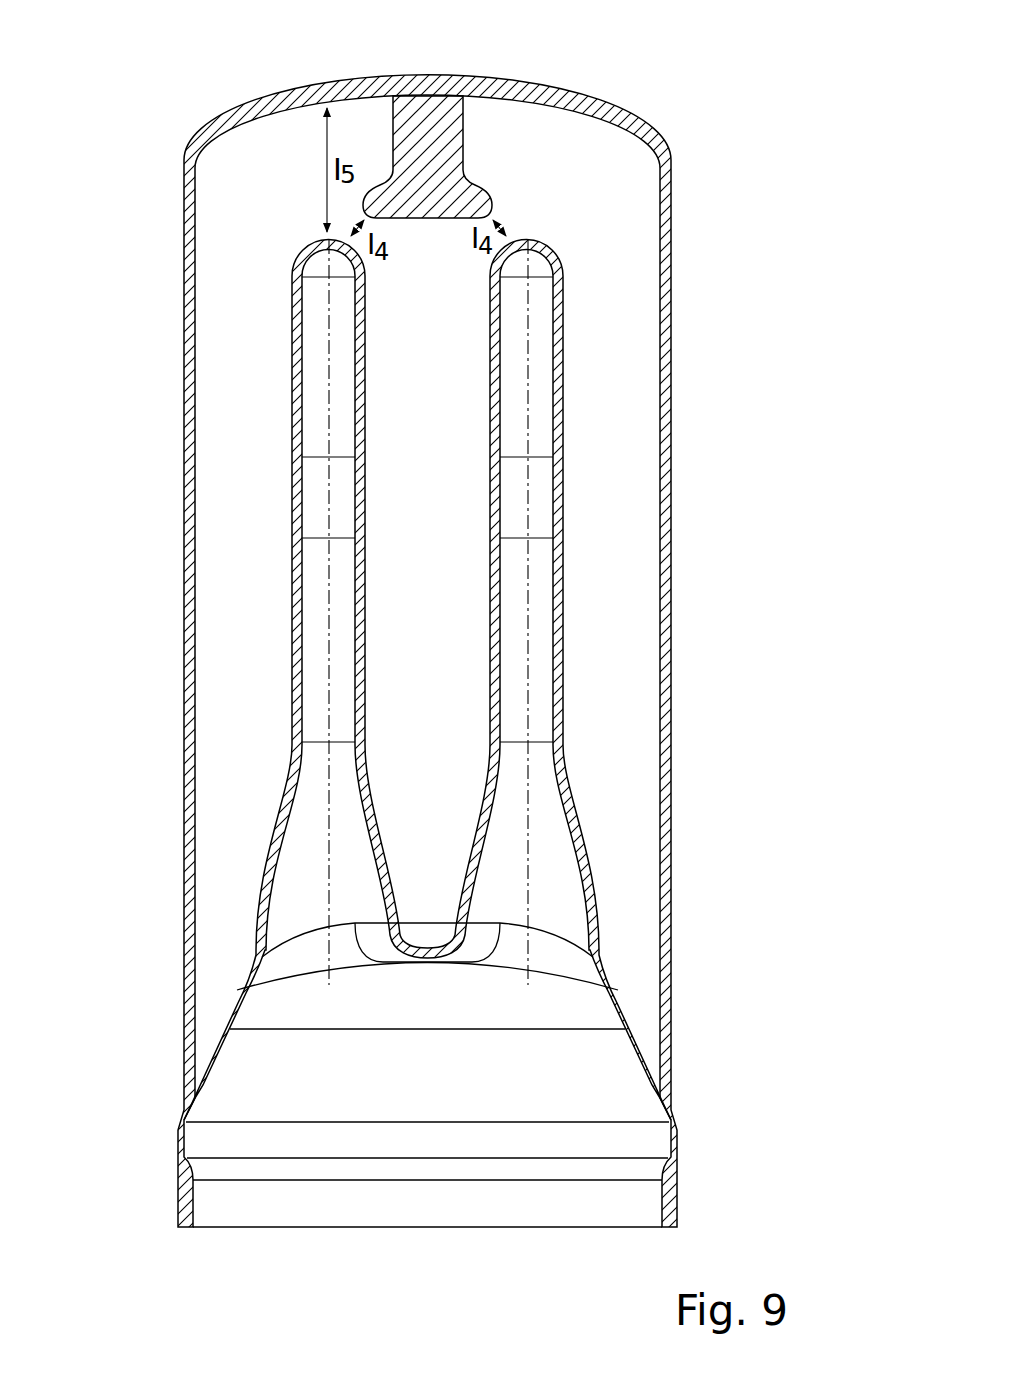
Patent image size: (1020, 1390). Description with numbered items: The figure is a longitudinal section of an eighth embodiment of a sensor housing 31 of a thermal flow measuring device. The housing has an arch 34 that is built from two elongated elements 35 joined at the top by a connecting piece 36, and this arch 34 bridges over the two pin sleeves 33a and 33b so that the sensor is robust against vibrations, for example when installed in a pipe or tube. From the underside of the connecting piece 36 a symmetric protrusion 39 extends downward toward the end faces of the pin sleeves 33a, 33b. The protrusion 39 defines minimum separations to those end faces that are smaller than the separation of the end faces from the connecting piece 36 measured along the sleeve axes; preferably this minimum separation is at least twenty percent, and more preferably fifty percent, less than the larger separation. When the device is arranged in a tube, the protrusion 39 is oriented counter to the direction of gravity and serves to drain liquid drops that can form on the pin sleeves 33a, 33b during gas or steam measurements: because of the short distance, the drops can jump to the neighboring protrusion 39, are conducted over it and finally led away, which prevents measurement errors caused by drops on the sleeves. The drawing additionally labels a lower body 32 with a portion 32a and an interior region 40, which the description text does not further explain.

The sensor housing 31 is at (698, 1023).
The piston 32 is at (371, 697).
The piston skirt sealing lip 32a is at (612, 997).
The pin sleeve 33a is at (427, 644).
The pin sleeve 33b is at (542, 267).
The arch 34 is at (480, 621).
The elongated element 35 is at (480, 621).
The connecting piece 36 is at (580, 107).
The symmetric protrusion 39 is at (425, 113).
The chamber 40 is at (632, 557).